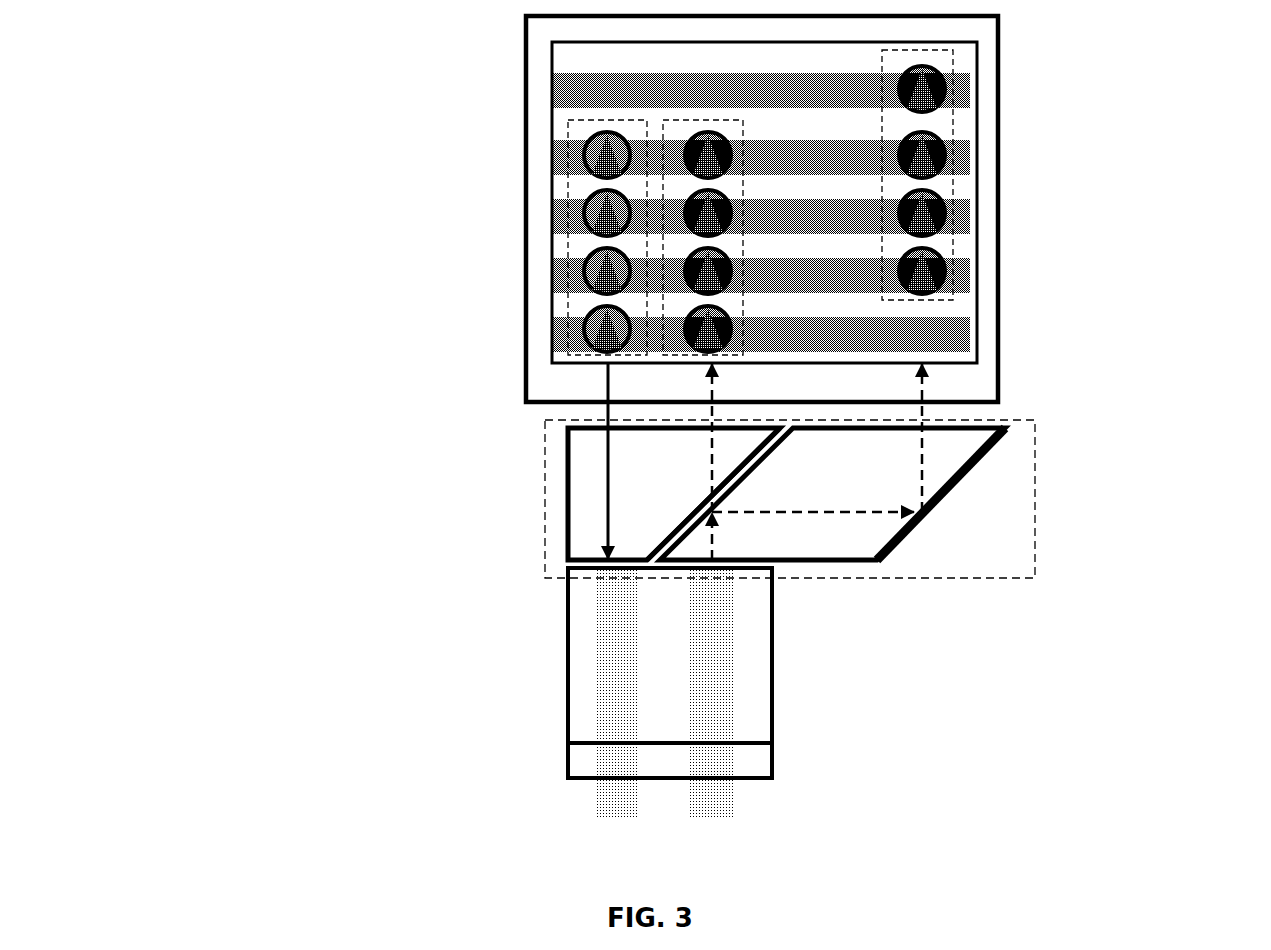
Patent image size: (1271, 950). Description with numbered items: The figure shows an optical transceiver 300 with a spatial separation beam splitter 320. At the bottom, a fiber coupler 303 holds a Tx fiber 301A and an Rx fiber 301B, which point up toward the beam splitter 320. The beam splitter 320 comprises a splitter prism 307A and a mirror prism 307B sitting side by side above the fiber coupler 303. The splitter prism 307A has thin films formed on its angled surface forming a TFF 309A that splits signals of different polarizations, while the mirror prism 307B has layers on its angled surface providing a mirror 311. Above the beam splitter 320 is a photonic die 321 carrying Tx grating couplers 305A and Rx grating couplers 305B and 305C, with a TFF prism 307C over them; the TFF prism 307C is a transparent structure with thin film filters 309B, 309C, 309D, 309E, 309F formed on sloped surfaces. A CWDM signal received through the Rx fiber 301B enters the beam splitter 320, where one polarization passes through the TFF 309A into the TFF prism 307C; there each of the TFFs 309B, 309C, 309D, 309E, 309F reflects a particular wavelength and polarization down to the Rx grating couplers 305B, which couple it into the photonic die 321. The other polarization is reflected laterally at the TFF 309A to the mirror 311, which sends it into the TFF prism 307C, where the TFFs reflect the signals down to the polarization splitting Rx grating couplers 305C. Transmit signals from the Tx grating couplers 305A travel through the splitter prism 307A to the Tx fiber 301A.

The transceiver 300 is at (163, 99).
The Tx fiber 301A is at (596, 819).
The Rx fiber 301B is at (867, 778).
The fiber coupler 303 is at (677, 724).
The Tx grating couplers 305A is at (566, 140).
The Rx grating couplers 305B is at (660, 117).
The Rx grating couplers 305C is at (963, 58).
The splitter prism 307A is at (568, 471).
The mirror prism 307B is at (837, 563).
The TFF prism 307C is at (978, 339).
The TFF 309A is at (688, 520).
The TFF 309B is at (972, 93).
The TFF 309C is at (972, 155).
The TFF 309D is at (972, 213).
The TFF 309E is at (972, 271).
The TFF 309F is at (972, 329).
The mirror 311 is at (959, 487).
The beam splitter 320 is at (747, 523).
The photonic die 321 is at (525, 297).